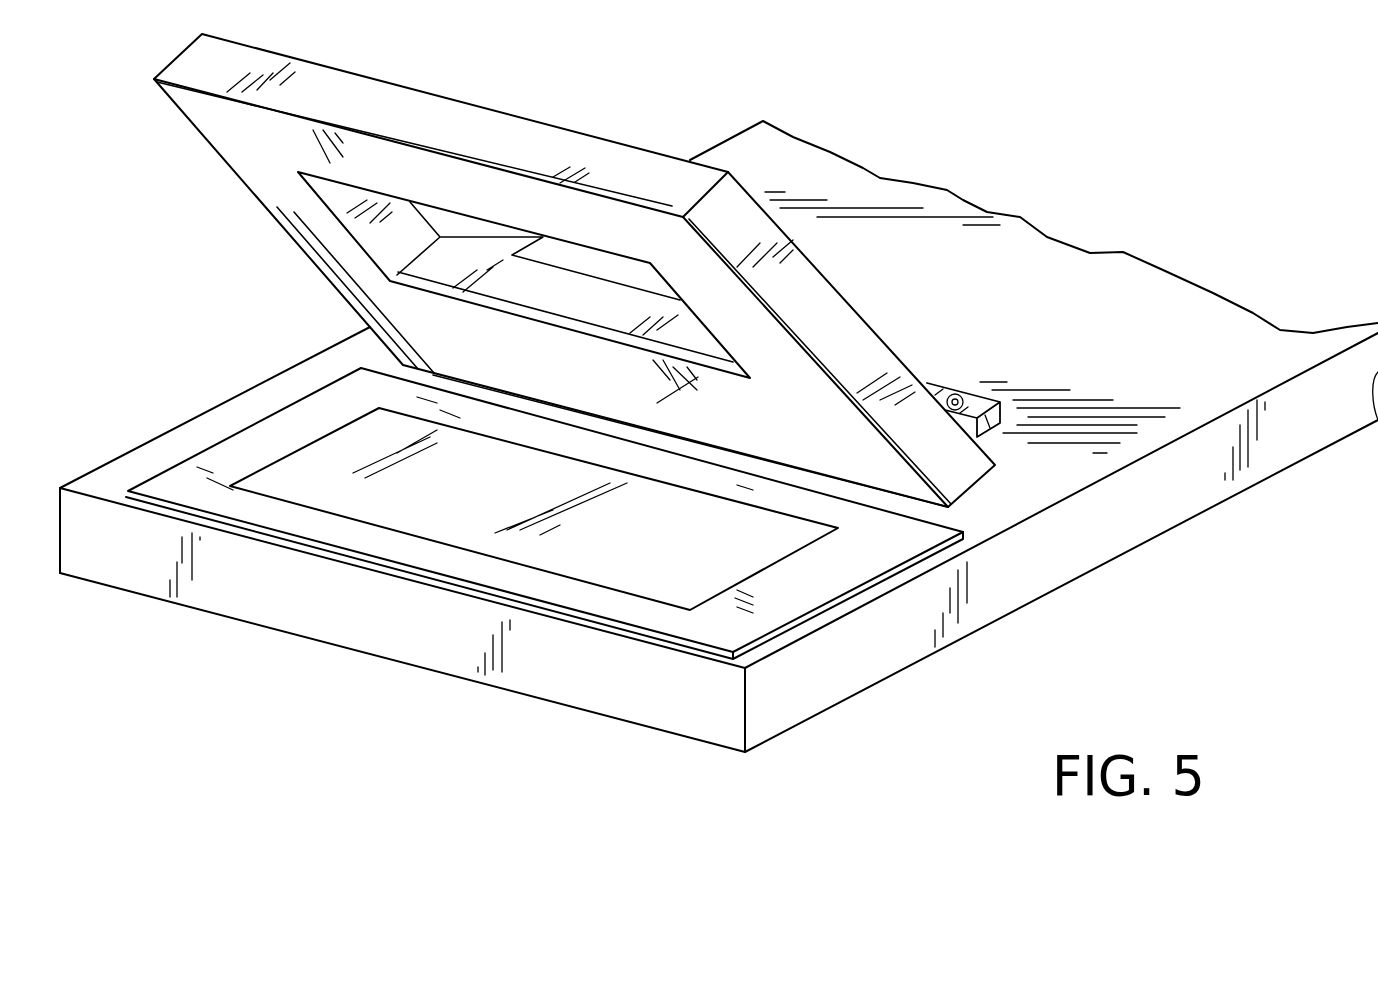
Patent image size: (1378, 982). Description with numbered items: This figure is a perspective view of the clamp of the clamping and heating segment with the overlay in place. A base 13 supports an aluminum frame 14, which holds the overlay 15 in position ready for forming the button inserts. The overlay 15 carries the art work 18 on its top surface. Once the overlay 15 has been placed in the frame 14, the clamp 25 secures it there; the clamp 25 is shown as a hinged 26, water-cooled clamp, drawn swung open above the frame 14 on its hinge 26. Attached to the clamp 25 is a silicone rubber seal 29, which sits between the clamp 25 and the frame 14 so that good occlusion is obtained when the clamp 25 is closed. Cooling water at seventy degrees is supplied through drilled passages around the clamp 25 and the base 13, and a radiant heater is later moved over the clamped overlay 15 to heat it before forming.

The base 13 is at (240, 595).
The frame 14 is at (740, 627).
The overlay 15 is at (758, 543).
The art work 18 is at (633, 538).
The clamp 25 is at (847, 340).
The hinge 26 is at (957, 393).
The silicone rubber seal 29 is at (238, 157).